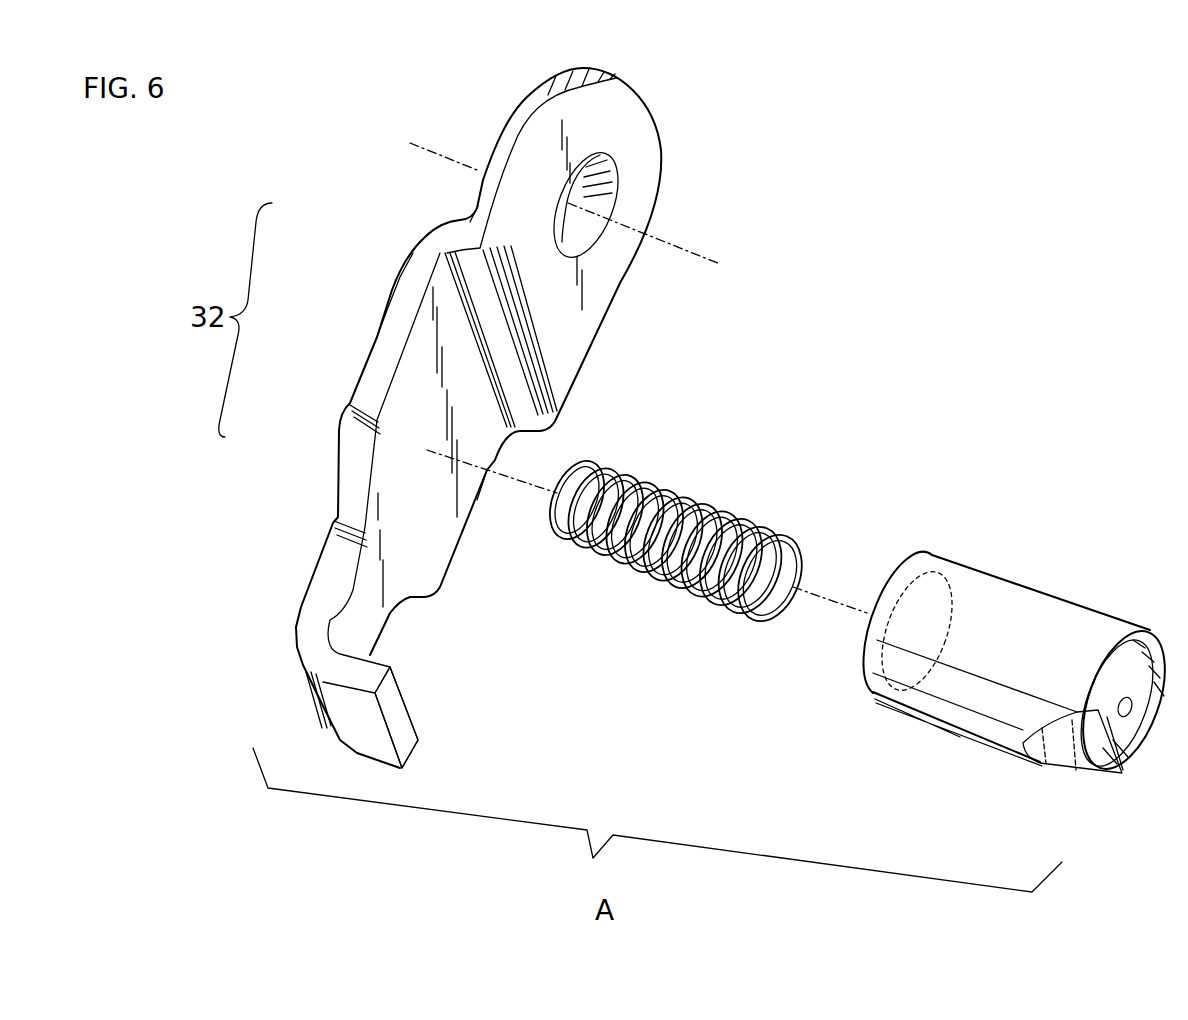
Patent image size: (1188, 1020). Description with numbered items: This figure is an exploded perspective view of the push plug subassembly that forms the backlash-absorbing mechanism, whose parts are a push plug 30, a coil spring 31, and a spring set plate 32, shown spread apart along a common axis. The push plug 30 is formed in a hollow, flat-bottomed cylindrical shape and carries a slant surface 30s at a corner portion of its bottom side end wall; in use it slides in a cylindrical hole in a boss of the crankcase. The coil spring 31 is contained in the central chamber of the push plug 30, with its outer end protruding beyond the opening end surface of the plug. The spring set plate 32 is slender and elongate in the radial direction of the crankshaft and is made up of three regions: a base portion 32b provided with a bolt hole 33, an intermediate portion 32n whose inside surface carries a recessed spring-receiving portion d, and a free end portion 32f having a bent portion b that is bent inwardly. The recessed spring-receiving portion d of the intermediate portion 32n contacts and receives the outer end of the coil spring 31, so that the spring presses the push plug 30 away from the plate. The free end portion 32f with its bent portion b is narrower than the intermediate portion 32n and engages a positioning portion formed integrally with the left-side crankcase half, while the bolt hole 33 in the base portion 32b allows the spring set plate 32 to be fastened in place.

The push plug 30 is at (1022, 678).
The slant surface 30s is at (1080, 758).
The coil spring 31 is at (647, 580).
The spring set plate 32 is at (527, 418).
The base portion 32b is at (483, 180).
The intermediate portion 32n is at (377, 337).
The free end portion 32f is at (357, 712).
The bolt hole 33 is at (593, 195).
The bent portion b is at (373, 745).
The recessed spring-receiving portion d is at (473, 487).